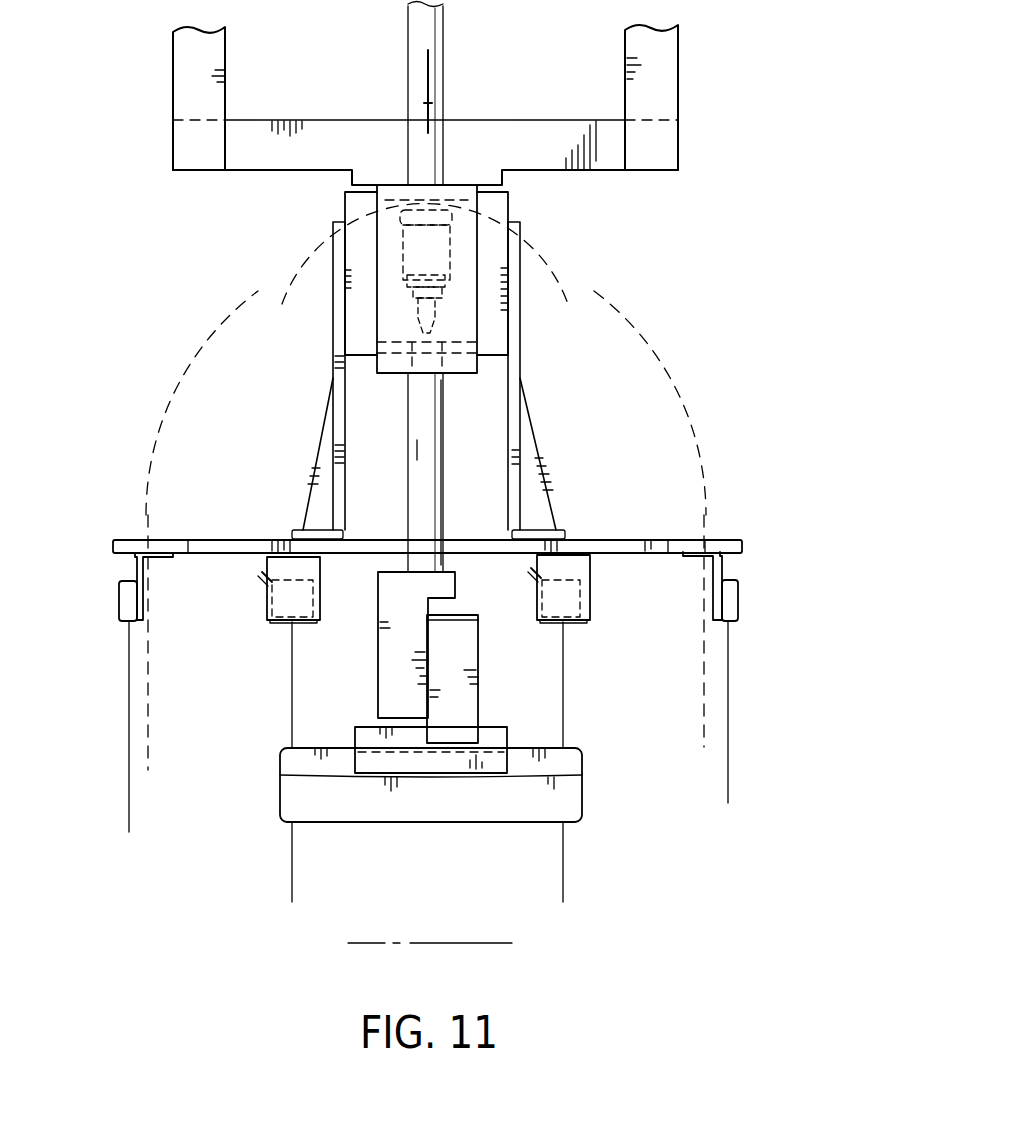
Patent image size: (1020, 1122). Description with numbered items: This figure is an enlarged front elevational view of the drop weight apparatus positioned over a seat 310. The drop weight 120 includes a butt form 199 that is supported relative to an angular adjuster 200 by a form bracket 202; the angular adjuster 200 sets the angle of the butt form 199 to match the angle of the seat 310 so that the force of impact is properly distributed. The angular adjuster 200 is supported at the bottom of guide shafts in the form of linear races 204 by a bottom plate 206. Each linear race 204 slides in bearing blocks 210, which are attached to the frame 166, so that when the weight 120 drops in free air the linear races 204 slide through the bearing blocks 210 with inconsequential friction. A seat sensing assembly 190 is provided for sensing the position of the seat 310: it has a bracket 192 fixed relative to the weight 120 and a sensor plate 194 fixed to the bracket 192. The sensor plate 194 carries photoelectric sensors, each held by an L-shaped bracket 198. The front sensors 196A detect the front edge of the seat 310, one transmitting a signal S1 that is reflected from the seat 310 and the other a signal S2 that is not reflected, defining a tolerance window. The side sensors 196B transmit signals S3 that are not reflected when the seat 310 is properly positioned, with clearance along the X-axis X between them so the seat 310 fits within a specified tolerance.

The frame 166 is at (680, 85).
The seat 310 is at (618, 307).
The bearing block 210 is at (388, 305).
The bracket 192 is at (490, 408).
The drop weight 120 is at (278, 470).
The linear race 204 is at (422, 507).
The bottom plate 206 is at (452, 584).
The sensor plate 194 is at (583, 540).
The seat sensing assembly 190 is at (682, 505).
The L-shaped bracket 198 is at (143, 567).
The front sensor 196A is at (277, 625).
The side sensor 196B is at (127, 623).
The signal S3 is at (129, 783).
The angular adjuster 200 is at (478, 653).
The butt form 199 is at (453, 823).
The form bracket 202 is at (363, 765).
The signal S1 is at (292, 863).
The signal S2 is at (567, 857).
The X-axis X is at (458, 943).